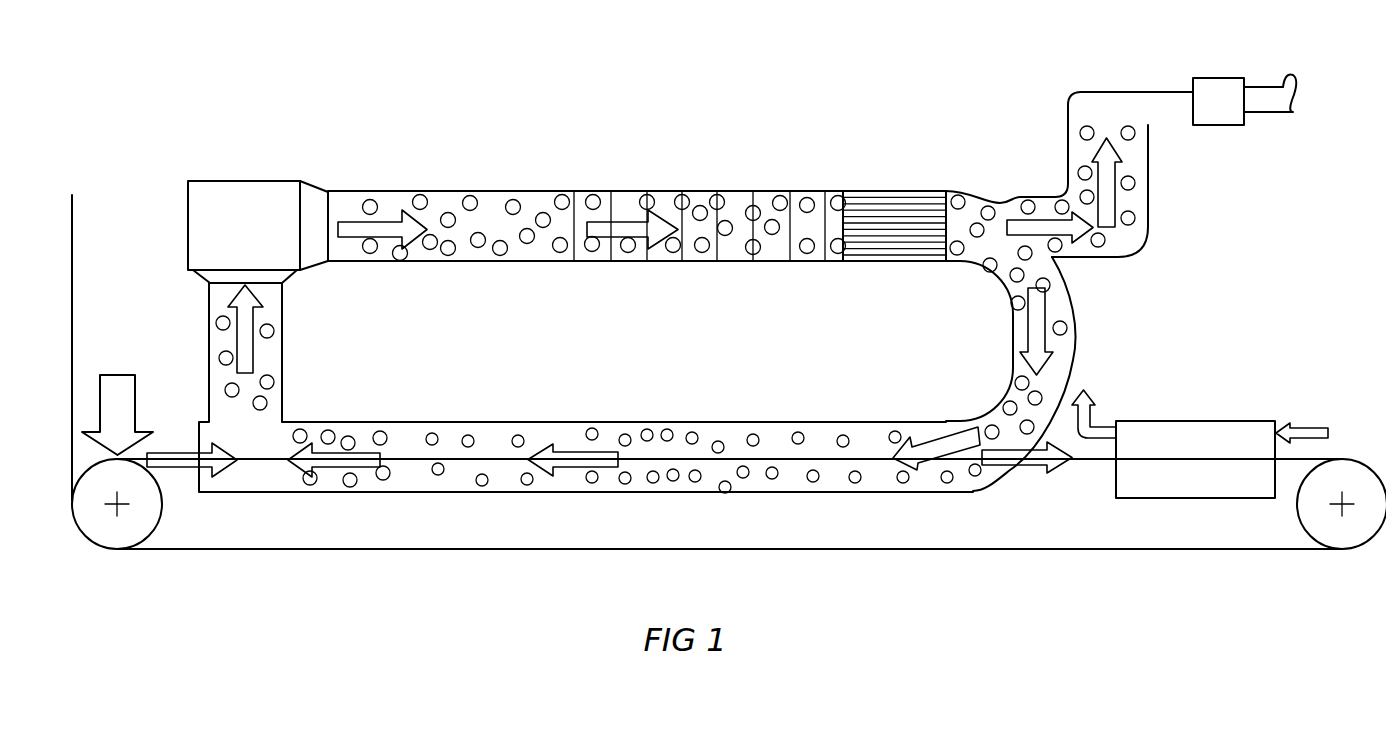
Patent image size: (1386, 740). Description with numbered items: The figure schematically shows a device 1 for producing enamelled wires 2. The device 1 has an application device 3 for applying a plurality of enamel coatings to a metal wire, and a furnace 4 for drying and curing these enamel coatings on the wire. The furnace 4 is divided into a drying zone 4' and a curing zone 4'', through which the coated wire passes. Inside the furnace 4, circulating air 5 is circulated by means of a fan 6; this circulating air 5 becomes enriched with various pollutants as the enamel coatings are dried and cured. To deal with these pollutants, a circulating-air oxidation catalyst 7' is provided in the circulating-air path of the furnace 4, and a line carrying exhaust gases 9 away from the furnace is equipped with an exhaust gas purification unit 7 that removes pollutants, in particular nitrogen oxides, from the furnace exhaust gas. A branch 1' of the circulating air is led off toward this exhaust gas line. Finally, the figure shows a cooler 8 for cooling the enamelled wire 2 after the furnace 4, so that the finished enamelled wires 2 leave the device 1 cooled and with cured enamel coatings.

The device 1 is at (699, 525).
The branch outlet flow arrow 1' is at (1077, 253).
The enamelled wires 2 is at (300, 552).
The application device 3 is at (98, 403).
The furnace 4 is at (670, 344).
The drying zone 4' is at (456, 509).
The curing zone 4'' is at (929, 512).
The circulating air 5 is at (350, 237).
The fan 6 is at (213, 181).
The exhaust gas purification unit 7 is at (1244, 83).
The circulating-air oxidation catalyst 7' is at (894, 253).
The cooler 8 is at (1228, 421).
The exhaust gases 9 is at (1122, 160).